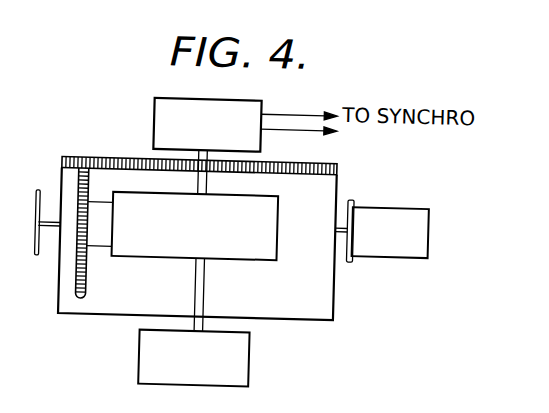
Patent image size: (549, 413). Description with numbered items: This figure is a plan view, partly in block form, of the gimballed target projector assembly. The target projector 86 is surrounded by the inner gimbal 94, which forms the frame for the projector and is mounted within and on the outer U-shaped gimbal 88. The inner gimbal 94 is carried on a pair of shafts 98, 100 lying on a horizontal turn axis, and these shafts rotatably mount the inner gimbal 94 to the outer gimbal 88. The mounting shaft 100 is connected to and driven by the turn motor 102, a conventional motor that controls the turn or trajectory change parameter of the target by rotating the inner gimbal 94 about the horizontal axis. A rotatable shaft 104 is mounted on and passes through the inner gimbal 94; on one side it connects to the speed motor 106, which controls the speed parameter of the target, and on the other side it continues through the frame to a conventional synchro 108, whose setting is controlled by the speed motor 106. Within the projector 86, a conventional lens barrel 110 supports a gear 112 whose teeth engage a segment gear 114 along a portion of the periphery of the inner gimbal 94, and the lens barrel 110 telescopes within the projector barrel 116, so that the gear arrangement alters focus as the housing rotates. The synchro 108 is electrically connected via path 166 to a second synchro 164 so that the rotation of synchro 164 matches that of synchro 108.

The target projector 86 is at (278, 230).
The outer U-shaped gimbal 88 is at (33, 246).
The inner gimbal 94 is at (336, 180).
The shaft 98 is at (52, 223).
The mounting shaft 100 is at (340, 233).
The turn motor 102 is at (406, 203).
The rotatable shaft 104 is at (206, 184).
The speed motor 106 is at (253, 346).
The synchro 108 is at (148, 116).
The lens barrel 110 is at (101, 206).
The gear 112 is at (89, 267).
The segment gear 114 is at (105, 162).
The projector barrel 116 is at (142, 265).
The synchro 164 is at (329, 137).
The path 166 is at (294, 129).